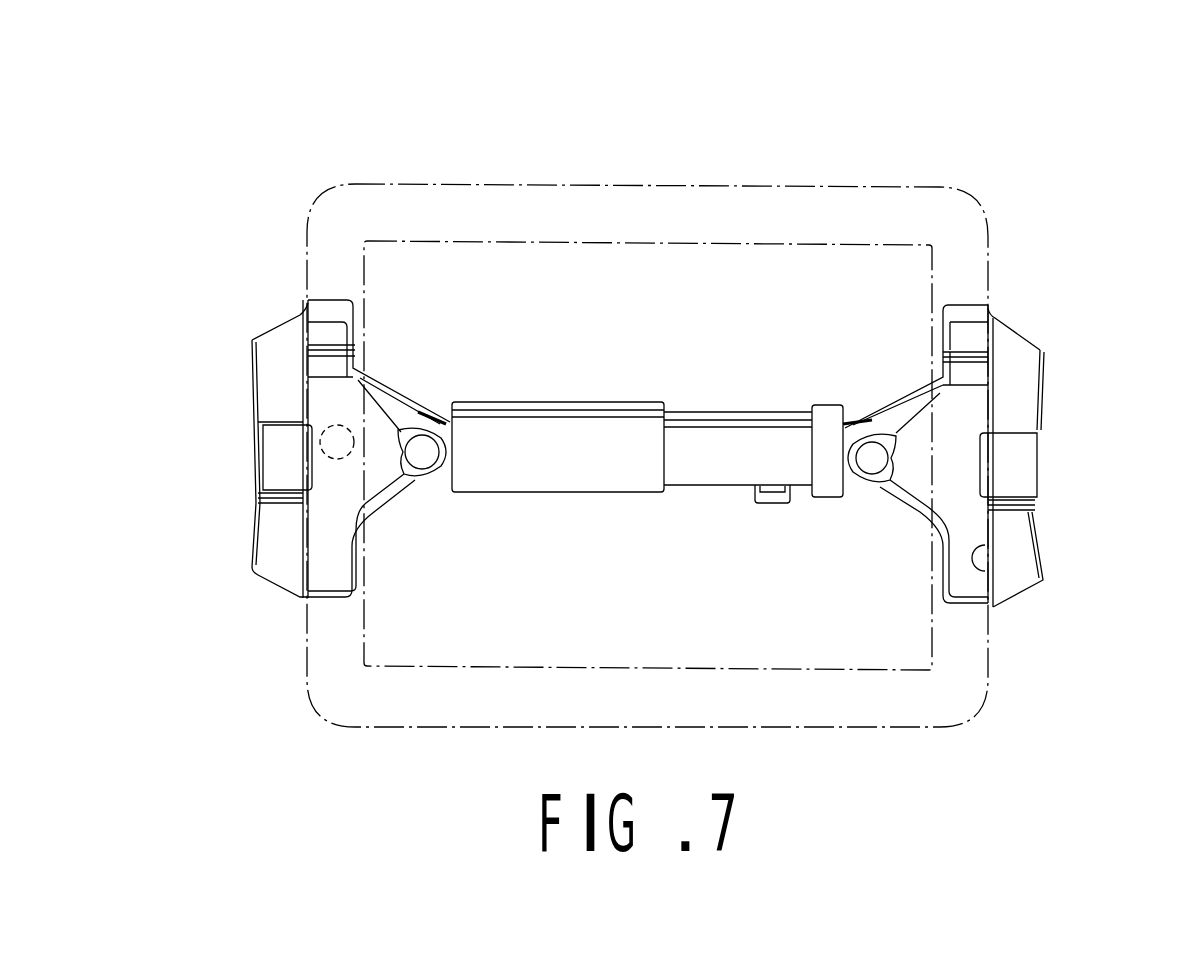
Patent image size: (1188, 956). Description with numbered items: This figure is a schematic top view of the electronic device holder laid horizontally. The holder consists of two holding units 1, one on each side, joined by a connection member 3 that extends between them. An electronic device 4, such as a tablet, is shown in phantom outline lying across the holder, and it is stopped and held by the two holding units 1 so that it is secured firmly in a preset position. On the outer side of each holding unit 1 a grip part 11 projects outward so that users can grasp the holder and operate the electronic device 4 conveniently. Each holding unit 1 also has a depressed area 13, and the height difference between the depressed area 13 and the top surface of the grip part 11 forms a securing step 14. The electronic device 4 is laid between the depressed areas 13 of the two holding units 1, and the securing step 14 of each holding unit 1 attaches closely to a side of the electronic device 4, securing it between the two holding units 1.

The holding unit 1 is at (651, 511).
The connection member 3 is at (622, 388).
The electronic device 4 is at (857, 215).
The grip part 11 is at (285, 340).
The depressed area 13 is at (326, 565).
The securing step 14 is at (300, 555).